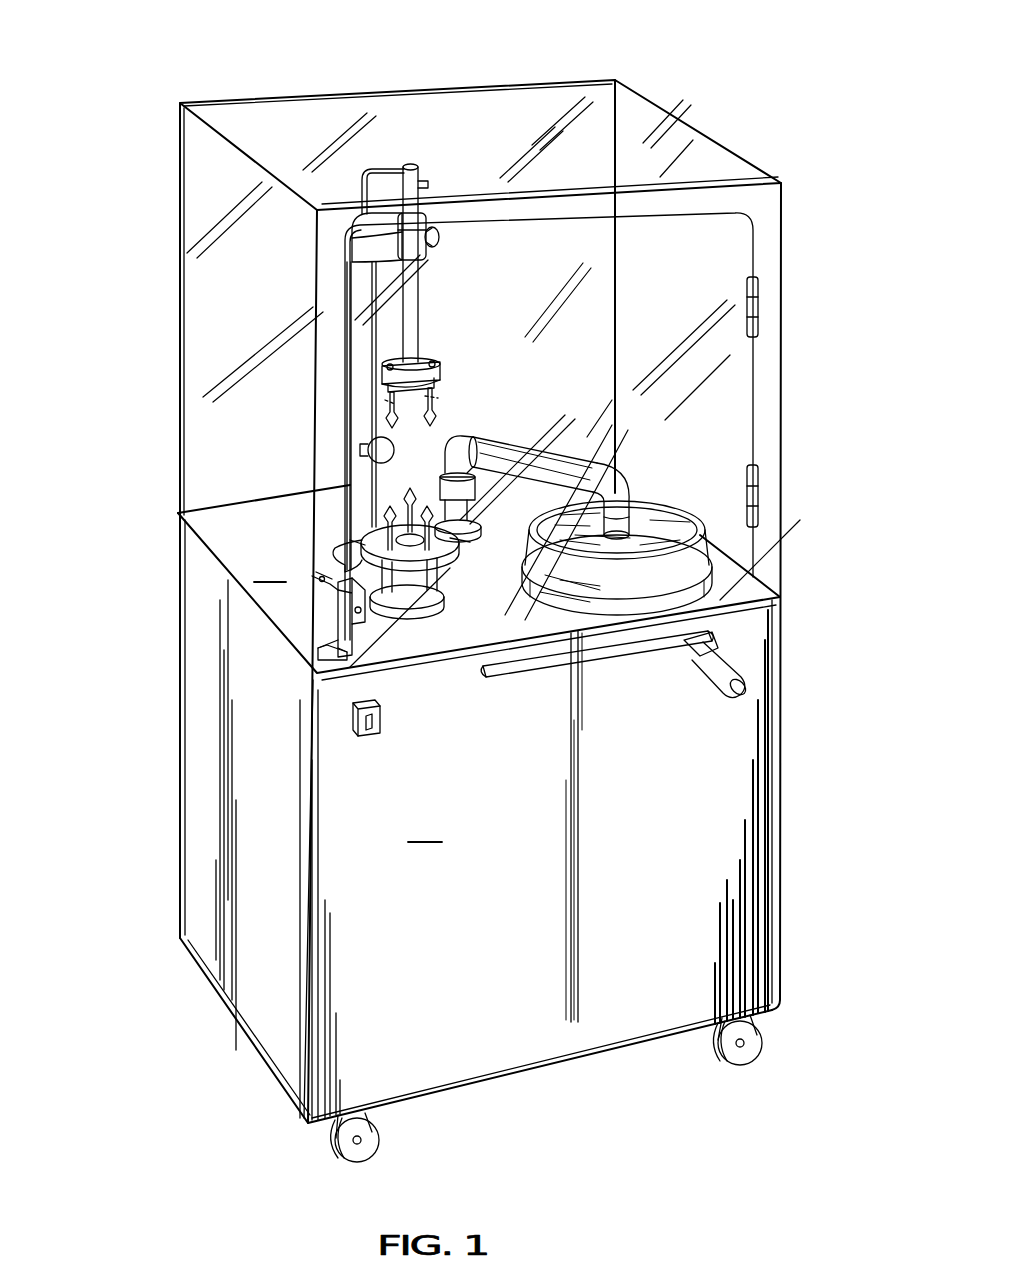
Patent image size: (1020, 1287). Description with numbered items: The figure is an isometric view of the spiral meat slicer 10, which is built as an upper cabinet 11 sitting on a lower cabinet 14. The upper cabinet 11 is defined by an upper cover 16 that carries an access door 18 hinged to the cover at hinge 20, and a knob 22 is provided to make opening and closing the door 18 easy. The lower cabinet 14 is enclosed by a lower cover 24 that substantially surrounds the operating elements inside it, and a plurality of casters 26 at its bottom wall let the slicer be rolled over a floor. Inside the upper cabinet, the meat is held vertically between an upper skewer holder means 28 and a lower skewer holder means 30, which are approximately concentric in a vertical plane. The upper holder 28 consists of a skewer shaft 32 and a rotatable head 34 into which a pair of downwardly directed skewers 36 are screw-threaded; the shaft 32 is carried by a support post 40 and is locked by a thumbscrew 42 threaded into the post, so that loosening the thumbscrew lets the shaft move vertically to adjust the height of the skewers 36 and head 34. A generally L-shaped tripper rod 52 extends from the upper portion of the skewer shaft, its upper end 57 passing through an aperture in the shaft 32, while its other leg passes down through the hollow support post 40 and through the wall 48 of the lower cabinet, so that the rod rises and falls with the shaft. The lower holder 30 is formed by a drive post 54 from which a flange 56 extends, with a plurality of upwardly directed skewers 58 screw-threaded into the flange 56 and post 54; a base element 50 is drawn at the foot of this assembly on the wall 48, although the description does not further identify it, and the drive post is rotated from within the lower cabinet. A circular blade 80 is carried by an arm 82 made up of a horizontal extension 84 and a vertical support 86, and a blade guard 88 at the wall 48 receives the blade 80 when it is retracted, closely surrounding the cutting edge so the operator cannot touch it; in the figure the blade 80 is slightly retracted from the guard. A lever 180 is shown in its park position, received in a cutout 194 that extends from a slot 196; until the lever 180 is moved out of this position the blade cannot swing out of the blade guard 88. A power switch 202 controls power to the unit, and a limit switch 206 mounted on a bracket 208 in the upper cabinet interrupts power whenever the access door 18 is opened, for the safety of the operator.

The spiral meat slicer 10 is at (675, 98).
The upper cabinet 11 is at (512, 102).
The lower cabinet 14 is at (612, 1030).
The upper cover 16 is at (684, 145).
The access door 18 is at (732, 266).
The hinge 20 is at (760, 304).
The knob 22 is at (368, 450).
The lower cover 24 is at (425, 826).
The casters 26 is at (335, 1152).
The upper skewer holder means 28 is at (426, 354).
The lower skewer holder means 30 is at (372, 532).
The skewer shaft 32 is at (419, 292).
The rotatable head 34 is at (440, 366).
The skewers 36 is at (434, 408).
The support post 40 is at (372, 228).
The thumbscrew 42 is at (440, 242).
The wall 48 is at (330, 578).
The base plate 50 is at (338, 546).
The tripper rod 52 is at (382, 170).
The drive post 54 is at (416, 597).
The flange 56 is at (440, 565).
The upper end of tripper rod 57 is at (429, 183).
The skewers 58 is at (428, 508).
The circular blade 80 is at (640, 515).
The arm 82 is at (532, 457).
The horizontal extension 84 is at (516, 453).
The vertical support 86 is at (476, 526).
The blade guard 88 is at (714, 577).
The lever 180 is at (748, 683).
The cutout 194 is at (698, 650).
The slot 196 is at (596, 655).
The power switch 202 is at (381, 722).
The limit switch 206 is at (338, 605).
The bracket 208 is at (314, 662).